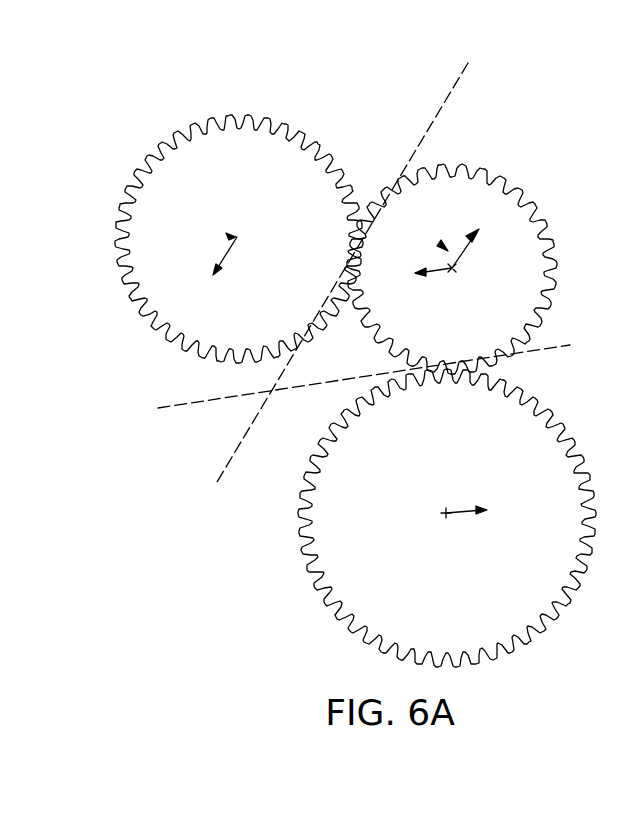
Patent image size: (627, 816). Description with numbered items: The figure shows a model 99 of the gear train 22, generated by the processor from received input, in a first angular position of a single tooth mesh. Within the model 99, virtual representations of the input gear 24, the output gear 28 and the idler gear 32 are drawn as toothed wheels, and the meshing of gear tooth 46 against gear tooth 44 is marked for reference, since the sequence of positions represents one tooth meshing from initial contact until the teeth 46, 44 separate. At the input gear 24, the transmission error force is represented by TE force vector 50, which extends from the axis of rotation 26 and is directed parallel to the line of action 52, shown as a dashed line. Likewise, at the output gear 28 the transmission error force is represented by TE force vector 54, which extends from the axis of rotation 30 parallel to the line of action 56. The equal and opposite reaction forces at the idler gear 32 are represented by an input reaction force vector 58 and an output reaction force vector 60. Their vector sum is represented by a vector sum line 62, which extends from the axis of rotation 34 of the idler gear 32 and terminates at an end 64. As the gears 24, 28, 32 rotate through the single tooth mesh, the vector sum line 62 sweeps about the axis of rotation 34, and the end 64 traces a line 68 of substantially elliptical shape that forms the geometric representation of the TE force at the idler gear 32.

The model 99 is at (118, 150).
The gear train 22 is at (174, 507).
The input gear 24 is at (222, 143).
The axis of rotation 26 is at (236, 237).
The output gear 28 is at (382, 590).
The axis of rotation 30 is at (446, 512).
The idler gear 32 is at (556, 253).
The axis of rotation 34 is at (452, 270).
The gear tooth 44 is at (447, 365).
The gear tooth 46 is at (453, 352).
The TE force vector 50 is at (235, 250).
The line of action 52 is at (437, 102).
The TE force vector 54 is at (460, 517).
The line of action 56 is at (537, 355).
The input reaction force vector 58 is at (460, 248).
The output reaction force vector 60 is at (446, 272).
The vector sum line 62 is at (444, 257).
The end 64 is at (446, 249).
The line 68 is at (470, 238).